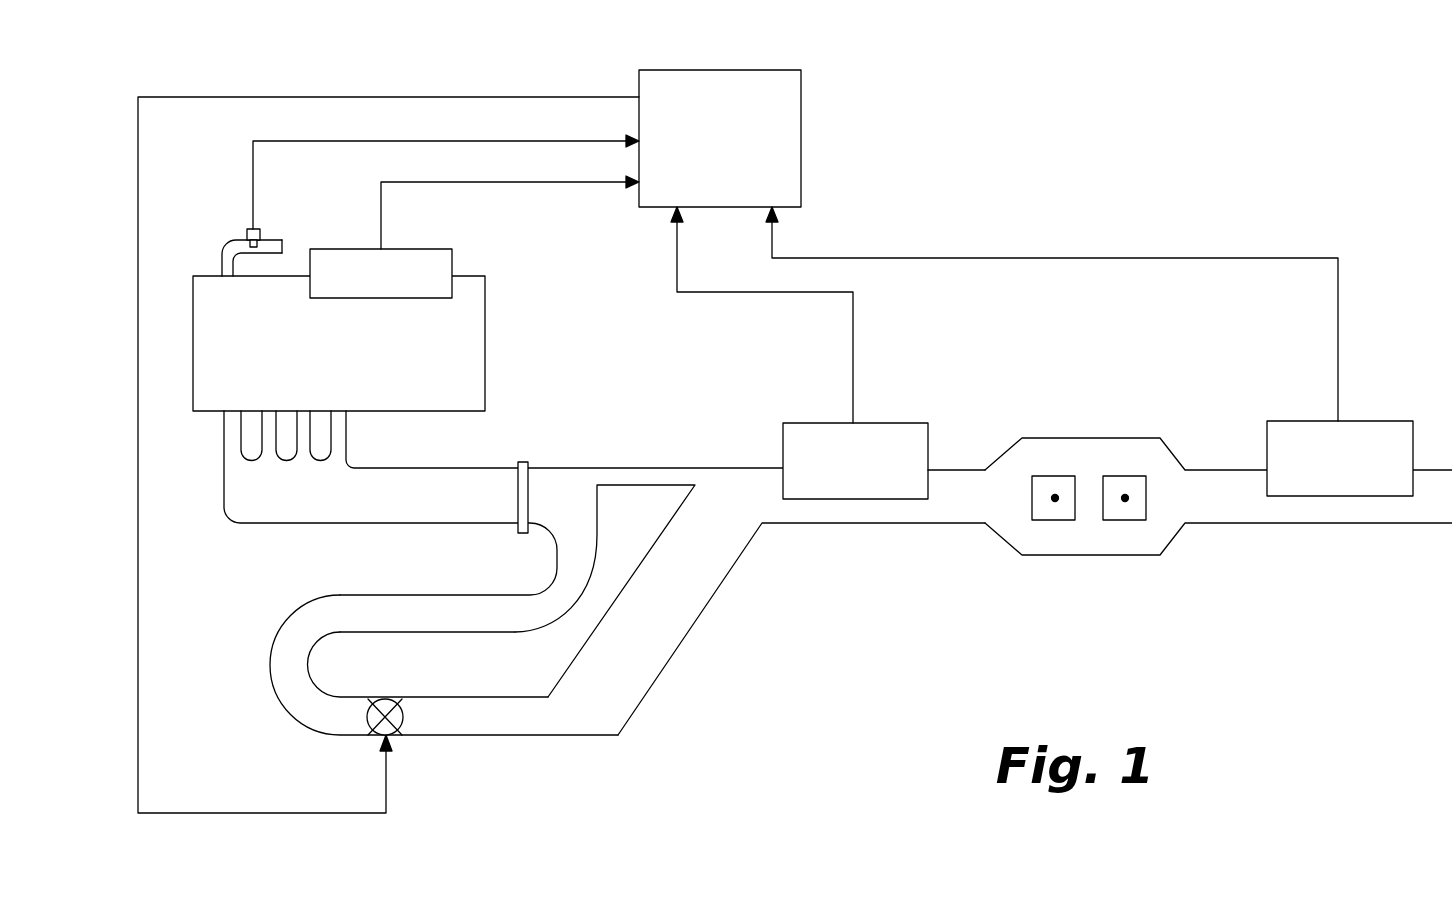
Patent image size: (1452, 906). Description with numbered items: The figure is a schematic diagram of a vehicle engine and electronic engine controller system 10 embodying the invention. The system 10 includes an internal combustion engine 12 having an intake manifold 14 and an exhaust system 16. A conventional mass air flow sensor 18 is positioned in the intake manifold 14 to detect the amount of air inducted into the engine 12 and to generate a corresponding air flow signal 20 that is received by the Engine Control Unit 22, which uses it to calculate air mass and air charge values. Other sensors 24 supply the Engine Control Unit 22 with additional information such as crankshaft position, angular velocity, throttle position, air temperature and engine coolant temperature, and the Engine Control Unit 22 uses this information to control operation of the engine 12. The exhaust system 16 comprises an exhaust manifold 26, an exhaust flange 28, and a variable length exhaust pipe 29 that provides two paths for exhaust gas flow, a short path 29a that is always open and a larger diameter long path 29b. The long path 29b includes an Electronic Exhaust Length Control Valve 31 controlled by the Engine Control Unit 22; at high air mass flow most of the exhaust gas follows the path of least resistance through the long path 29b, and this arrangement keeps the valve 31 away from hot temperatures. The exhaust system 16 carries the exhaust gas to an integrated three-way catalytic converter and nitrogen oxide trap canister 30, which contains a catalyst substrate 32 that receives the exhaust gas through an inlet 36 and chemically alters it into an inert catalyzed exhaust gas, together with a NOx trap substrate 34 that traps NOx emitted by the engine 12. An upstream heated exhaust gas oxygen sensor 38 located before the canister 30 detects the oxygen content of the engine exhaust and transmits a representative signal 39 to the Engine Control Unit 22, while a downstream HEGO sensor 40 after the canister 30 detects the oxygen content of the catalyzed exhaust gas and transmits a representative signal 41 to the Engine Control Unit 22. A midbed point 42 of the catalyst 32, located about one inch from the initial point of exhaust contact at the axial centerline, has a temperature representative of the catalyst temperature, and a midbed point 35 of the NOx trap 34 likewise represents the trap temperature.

The system 10 is at (1142, 119).
The internal combustion engine 12 is at (485, 333).
The intake manifold 14 is at (281, 241).
The exhaust system 16 is at (578, 735).
The mass air flow sensor 18 is at (256, 229).
The air flow signal 20 is at (250, 157).
The Engine Control Unit 22 is at (757, 70).
The sensors 24 is at (413, 249).
The exhaust manifold 26 is at (396, 468).
The exhaust flange 28 is at (524, 462).
The variable length exhaust pipe 29 is at (270, 660).
The short path 29a is at (646, 468).
The long path 29b is at (422, 595).
The integrated three-way catalytic converter/NOx trap canister 30 is at (1131, 438).
The Electronic Exhaust Length Control Valve 31 is at (405, 720).
The catalyst substrate 32 is at (1055, 520).
The NOx trap substrate 34 is at (1125, 520).
The midbed point of NOx trap 35 is at (1125, 498).
The inlet 36 is at (977, 497).
The upstream heated exhaust gas oxygen sensor 38 is at (890, 423).
The representative signal 39 is at (853, 326).
The downstream HEGO sensor 40 is at (1383, 421).
The representative signal 41 is at (1338, 300).
The midbed point of catalyst 42 is at (1055, 498).